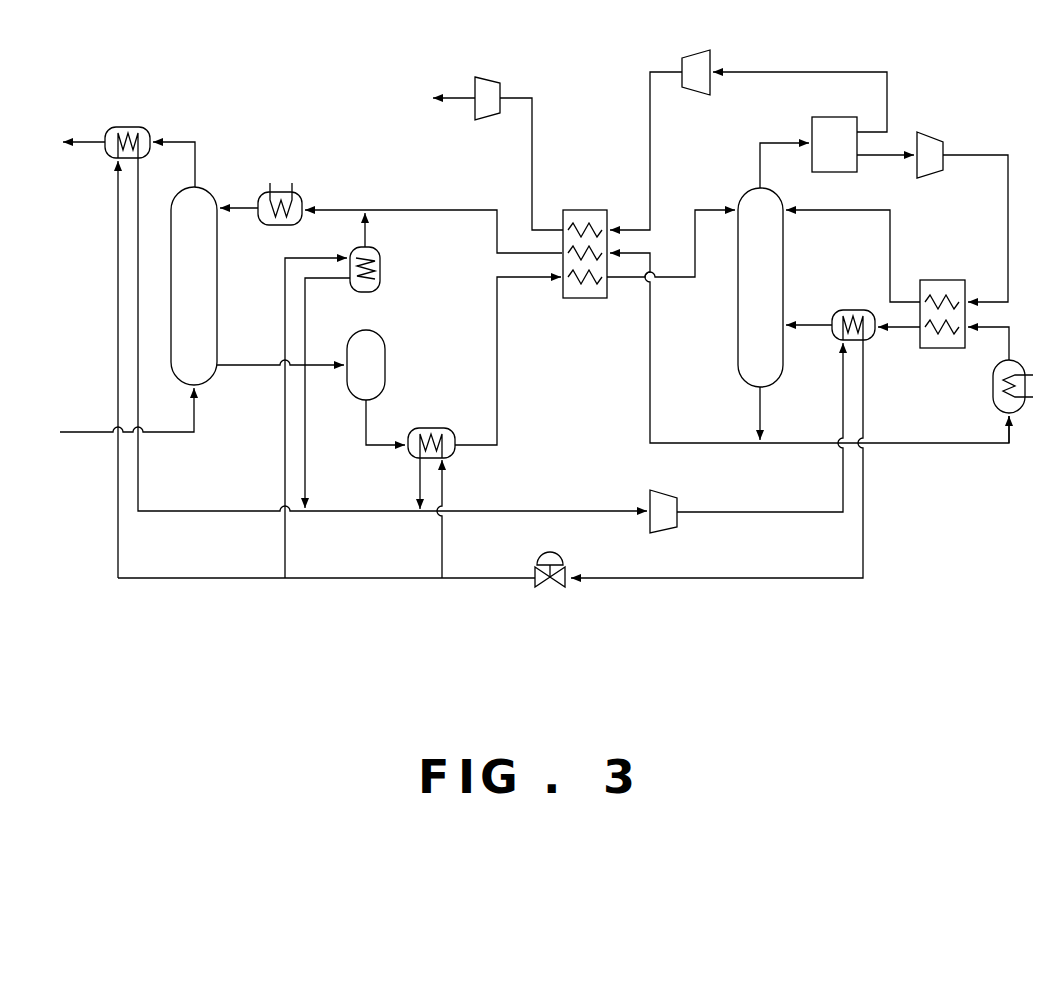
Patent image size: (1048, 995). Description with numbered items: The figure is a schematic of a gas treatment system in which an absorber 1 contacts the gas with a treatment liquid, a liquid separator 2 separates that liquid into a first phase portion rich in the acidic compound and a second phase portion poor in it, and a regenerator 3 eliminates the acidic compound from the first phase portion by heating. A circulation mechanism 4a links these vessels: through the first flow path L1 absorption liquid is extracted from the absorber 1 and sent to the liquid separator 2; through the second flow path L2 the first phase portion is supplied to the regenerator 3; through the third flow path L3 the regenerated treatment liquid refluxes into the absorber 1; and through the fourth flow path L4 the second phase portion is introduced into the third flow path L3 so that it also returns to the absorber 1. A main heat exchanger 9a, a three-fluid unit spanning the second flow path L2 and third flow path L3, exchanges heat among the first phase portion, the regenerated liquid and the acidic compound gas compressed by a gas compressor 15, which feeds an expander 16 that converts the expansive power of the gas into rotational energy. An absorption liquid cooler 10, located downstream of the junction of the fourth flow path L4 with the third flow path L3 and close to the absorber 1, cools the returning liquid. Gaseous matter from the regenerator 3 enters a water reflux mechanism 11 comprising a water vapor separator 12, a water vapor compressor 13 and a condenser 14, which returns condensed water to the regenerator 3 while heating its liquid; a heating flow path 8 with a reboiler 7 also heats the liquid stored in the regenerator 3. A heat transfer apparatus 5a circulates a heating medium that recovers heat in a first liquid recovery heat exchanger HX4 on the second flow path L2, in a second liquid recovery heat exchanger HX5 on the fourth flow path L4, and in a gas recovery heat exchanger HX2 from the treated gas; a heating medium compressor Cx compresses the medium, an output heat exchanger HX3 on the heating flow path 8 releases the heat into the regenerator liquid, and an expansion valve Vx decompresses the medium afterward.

The absorber 1 is at (212, 190).
The liquid separator 2 is at (388, 350).
The regenerator 3 is at (748, 190).
The reboiler 7 is at (992, 386).
The heating flow path 8 is at (940, 445).
The main heat exchanger 9a is at (586, 209).
The absorption liquid cooler 10 is at (272, 228).
The water reflux mechanism 11 is at (980, 152).
The water vapor separator 12 is at (811, 118).
The water vapor compressor 13 is at (930, 132).
The condenser 14 is at (943, 279).
The gas compressor 15 is at (694, 57).
The expander 16 is at (488, 76).
The circulation mechanism 4a is at (403, 190).
The heat transfer apparatus 5a is at (548, 502).
The first flow path L1 is at (255, 372).
The second flow path L2 is at (499, 350).
The third flow path L3 is at (481, 208).
The fourth flow path L4 is at (372, 231).
The gas recovery heat exchanger HX2 is at (128, 126).
The output heat exchanger HX3 is at (853, 309).
The first liquid recovery heat exchanger HX4 is at (432, 427).
The second liquid recovery heat exchanger HX5 is at (383, 272).
The heating medium compressor Cx is at (650, 494).
The expansion valve Vx is at (535, 570).